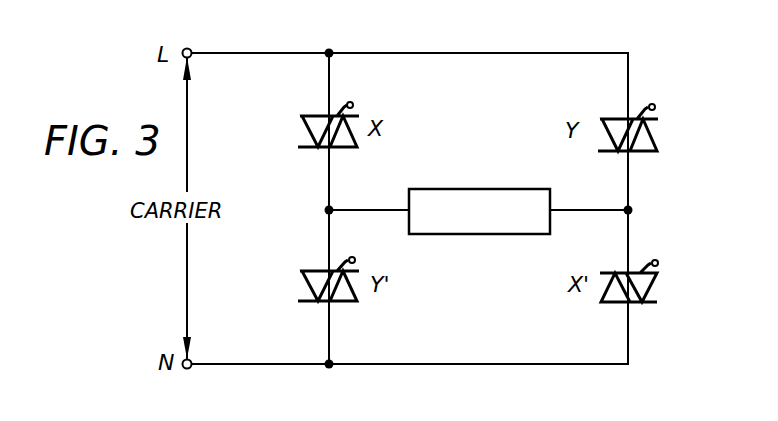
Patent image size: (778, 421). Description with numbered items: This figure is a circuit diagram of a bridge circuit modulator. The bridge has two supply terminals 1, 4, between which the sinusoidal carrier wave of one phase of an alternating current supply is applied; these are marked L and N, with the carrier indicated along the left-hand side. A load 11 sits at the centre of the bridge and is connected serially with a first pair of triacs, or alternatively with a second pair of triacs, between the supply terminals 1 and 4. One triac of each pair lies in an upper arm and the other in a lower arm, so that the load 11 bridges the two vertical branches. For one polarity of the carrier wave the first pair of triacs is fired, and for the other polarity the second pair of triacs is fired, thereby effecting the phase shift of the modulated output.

The supply terminal 1 is at (187, 48).
The supply terminal 4 is at (193, 363).
The load 11 is at (478, 186).